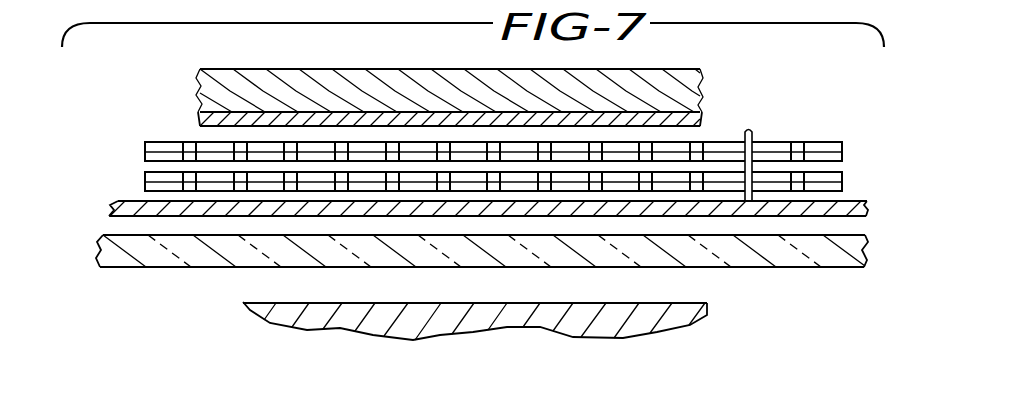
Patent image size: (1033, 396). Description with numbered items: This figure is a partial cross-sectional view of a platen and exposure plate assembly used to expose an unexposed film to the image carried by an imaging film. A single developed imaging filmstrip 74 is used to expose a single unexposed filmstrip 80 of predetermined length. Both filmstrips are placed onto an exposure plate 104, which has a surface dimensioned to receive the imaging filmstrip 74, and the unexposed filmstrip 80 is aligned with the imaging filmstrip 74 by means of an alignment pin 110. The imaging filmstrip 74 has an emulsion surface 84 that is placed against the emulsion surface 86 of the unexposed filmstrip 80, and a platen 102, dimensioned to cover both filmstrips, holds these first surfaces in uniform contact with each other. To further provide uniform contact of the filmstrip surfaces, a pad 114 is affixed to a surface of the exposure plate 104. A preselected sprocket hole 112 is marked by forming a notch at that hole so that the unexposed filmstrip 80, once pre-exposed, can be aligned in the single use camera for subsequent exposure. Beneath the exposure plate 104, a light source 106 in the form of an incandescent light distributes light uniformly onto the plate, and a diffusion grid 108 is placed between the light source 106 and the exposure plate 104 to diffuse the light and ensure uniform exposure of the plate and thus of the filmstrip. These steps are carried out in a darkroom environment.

The platen 102 is at (668, 85).
The pad 114 is at (197, 120).
The unexposed filmstrip 80 is at (150, 141).
The emulsion surface of the unexposed filmstrip 86 is at (574, 165).
The preselected sprocket hole 112 is at (818, 147).
The imaging filmstrip 74 is at (145, 182).
The emulsion surface of the imaging filmstrip 84 is at (813, 174).
The alignment pin 110 is at (750, 130).
The exposure plate 104 is at (120, 201).
The diffusion grid 108 is at (200, 253).
The light source 106 is at (685, 306).